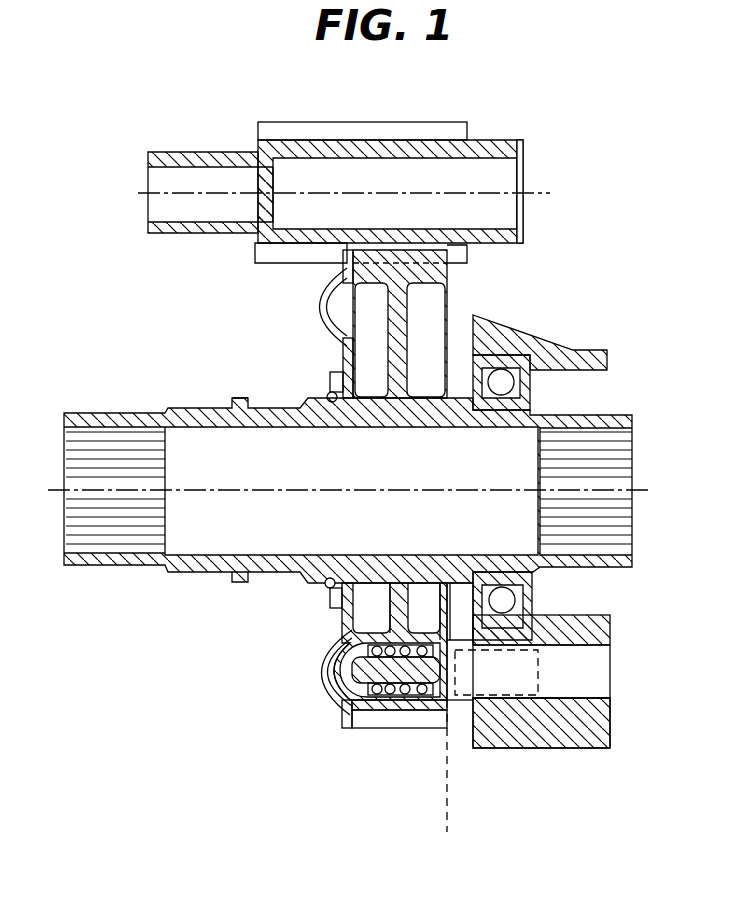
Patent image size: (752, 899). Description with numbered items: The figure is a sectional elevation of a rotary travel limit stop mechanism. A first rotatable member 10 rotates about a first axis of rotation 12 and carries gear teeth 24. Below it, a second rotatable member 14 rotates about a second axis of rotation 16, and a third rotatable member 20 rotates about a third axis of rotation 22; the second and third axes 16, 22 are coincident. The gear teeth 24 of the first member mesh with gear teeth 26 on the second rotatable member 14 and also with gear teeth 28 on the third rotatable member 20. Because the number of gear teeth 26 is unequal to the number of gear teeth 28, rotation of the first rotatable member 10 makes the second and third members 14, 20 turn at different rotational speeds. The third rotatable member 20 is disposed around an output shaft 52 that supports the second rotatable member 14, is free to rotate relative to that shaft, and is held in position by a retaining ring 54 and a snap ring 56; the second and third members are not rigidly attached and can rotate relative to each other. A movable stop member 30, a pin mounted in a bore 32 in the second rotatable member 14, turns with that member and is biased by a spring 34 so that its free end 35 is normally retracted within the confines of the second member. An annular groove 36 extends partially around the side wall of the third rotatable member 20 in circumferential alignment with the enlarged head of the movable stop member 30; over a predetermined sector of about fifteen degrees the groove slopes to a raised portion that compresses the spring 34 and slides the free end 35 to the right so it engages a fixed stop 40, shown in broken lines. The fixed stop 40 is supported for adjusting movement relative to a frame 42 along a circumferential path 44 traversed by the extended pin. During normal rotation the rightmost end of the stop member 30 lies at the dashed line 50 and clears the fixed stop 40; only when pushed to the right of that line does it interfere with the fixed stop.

The first rotatable member 10 is at (523, 143).
The first axis of rotation 12 is at (538, 190).
The second rotatable member 14 is at (450, 283).
The second axis of rotation 16 is at (455, 490).
The third rotatable member 20 is at (328, 376).
The third axis of rotation 22 is at (243, 488).
The gear teeth 24 is at (290, 122).
The gear teeth 26 is at (470, 258).
The gear teeth 28 is at (342, 272).
The movable stop member 30 is at (340, 700).
The bore 32 is at (425, 692).
The spring 34 is at (410, 636).
The free end 35 is at (435, 647).
The annular groove 36 is at (321, 313).
The fixed stop 40 is at (520, 665).
The frame 42 is at (565, 745).
The circumferential path 44 is at (607, 690).
The dashed line 50 is at (447, 832).
The output shaft 52 is at (360, 412).
The retaining ring 54 is at (330, 608).
The snap ring 56 is at (325, 586).